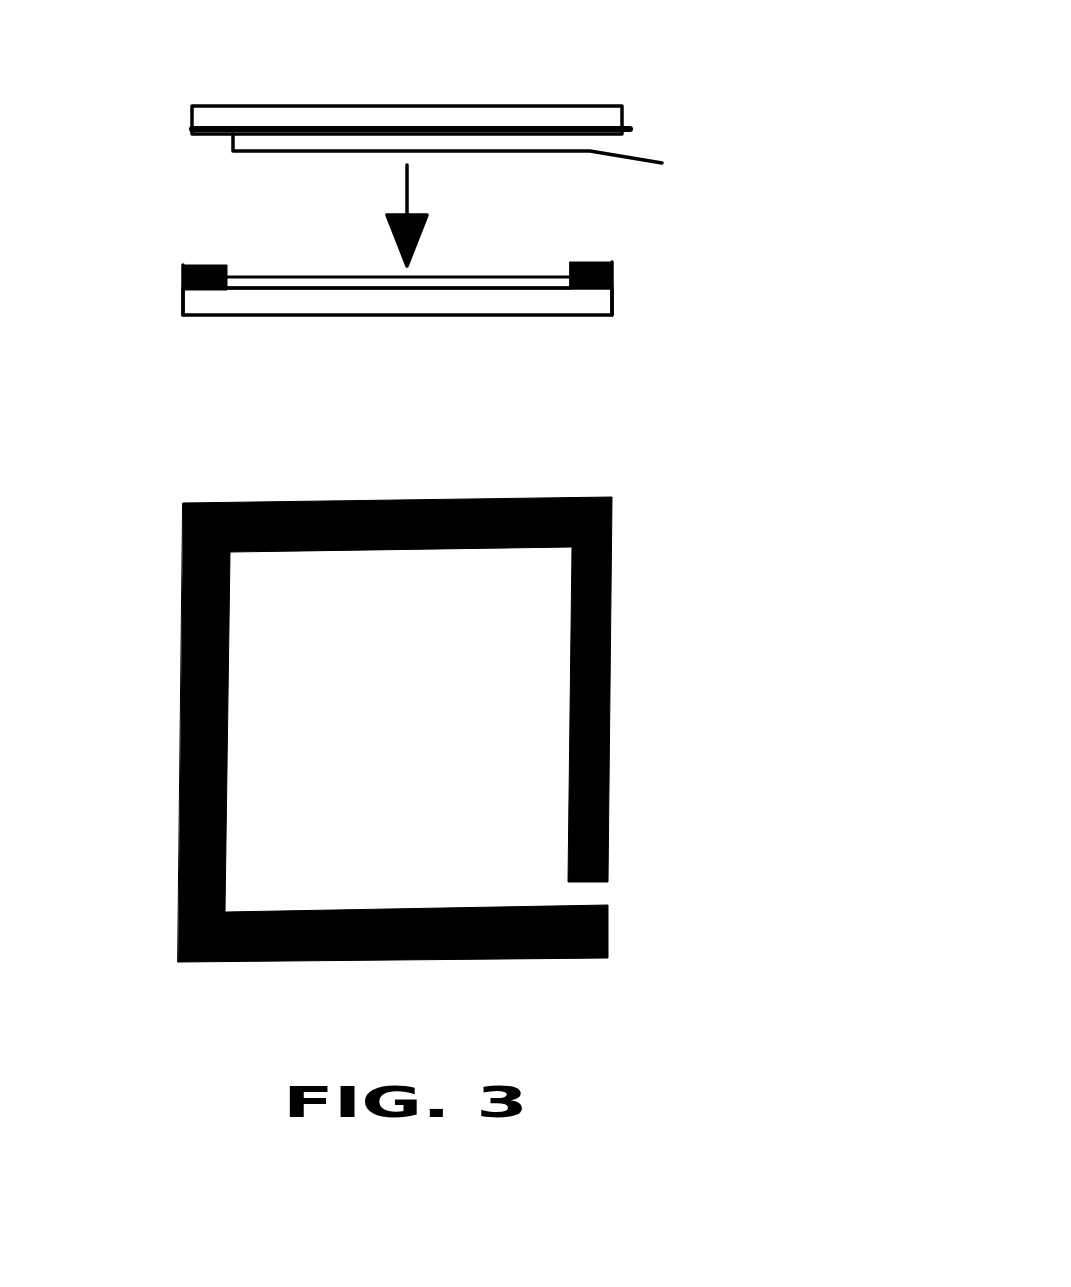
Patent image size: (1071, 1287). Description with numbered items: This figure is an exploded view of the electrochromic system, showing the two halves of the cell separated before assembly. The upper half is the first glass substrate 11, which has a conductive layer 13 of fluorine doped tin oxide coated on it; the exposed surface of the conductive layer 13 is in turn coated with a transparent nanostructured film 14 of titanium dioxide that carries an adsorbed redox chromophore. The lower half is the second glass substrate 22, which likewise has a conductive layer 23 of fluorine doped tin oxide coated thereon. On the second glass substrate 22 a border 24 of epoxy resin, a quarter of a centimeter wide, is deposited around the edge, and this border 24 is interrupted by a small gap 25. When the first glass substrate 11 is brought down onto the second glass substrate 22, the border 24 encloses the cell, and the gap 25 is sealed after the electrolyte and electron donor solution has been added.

The first glass substrate 11 is at (620, 112).
The conductive layer 13 is at (203, 137).
The transparent nanostructured film 14 is at (530, 140).
The second glass substrate 22 is at (523, 298).
The conductive layer 23 is at (510, 277).
The border 24 is at (613, 272).
The gap 25 is at (602, 890).